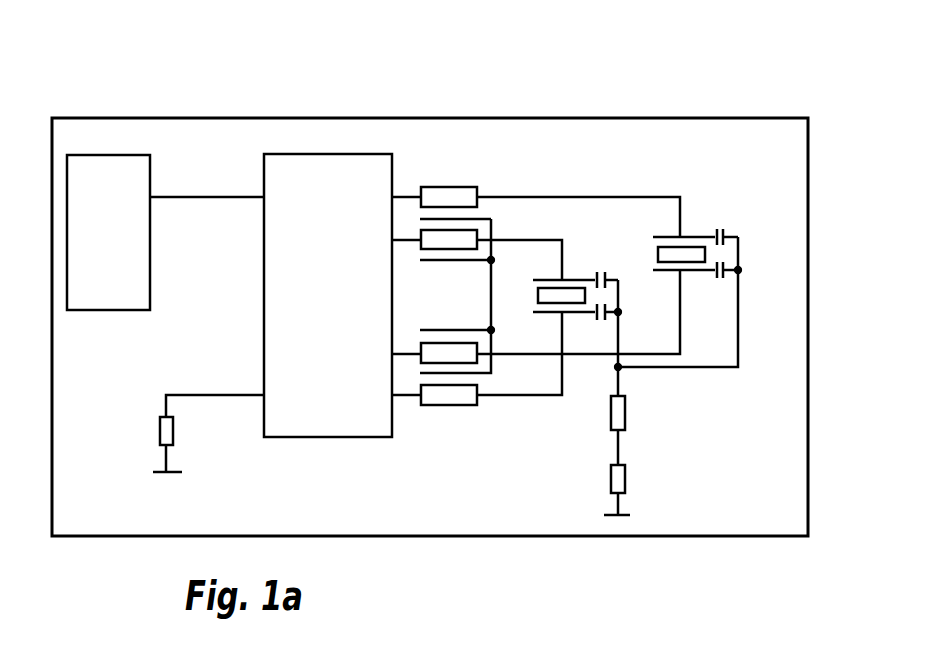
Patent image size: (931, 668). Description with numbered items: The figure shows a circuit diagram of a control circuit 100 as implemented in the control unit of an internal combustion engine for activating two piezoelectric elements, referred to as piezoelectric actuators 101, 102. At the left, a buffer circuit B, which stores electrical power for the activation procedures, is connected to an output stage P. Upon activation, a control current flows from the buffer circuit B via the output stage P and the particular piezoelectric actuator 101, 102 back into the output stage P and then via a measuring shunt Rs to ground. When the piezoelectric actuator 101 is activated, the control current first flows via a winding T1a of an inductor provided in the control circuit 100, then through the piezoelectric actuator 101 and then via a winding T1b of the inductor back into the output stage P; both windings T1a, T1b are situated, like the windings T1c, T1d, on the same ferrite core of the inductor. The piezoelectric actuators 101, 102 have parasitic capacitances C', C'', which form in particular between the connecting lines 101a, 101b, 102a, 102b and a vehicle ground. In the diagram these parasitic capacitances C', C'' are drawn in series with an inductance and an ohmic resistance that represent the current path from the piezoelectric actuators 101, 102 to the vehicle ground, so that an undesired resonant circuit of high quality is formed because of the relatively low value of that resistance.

The control circuit 100 is at (695, 109).
The piezoelectric actuator 101 is at (583, 276).
The piezoelectric actuator 102 is at (707, 229).
The connecting line 101a is at (525, 240).
The connecting line 101b is at (500, 397).
The connecting line 102a is at (630, 197).
The connecting line 102b is at (550, 356).
The winding T1a is at (440, 250).
The winding T1b is at (447, 406).
The winding T1c is at (455, 190).
The winding T1d is at (455, 345).
The buffer circuit B is at (108, 232).
The output stage P is at (328, 295).
The measuring shunt Rs is at (195, 433).
The parasitic capacitance C' is at (753, 213).
The parasitic capacitance C'' is at (715, 311).